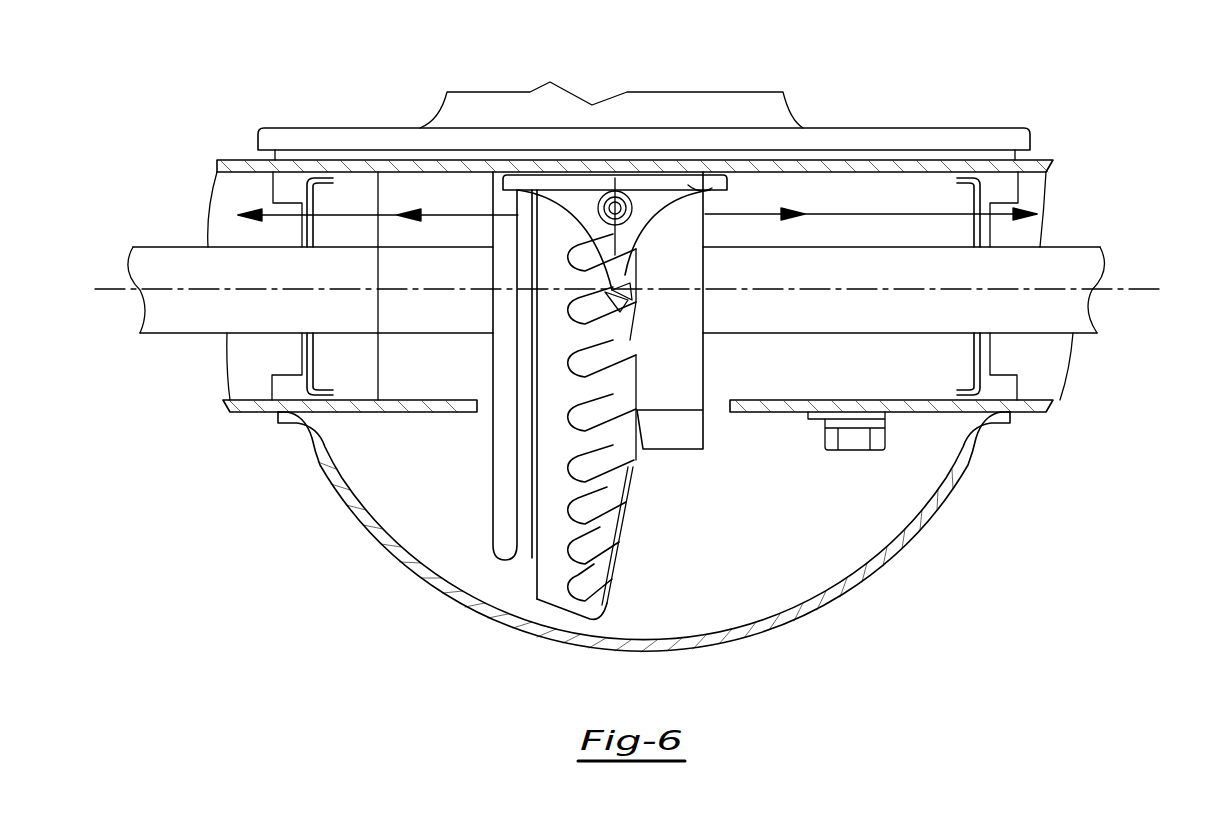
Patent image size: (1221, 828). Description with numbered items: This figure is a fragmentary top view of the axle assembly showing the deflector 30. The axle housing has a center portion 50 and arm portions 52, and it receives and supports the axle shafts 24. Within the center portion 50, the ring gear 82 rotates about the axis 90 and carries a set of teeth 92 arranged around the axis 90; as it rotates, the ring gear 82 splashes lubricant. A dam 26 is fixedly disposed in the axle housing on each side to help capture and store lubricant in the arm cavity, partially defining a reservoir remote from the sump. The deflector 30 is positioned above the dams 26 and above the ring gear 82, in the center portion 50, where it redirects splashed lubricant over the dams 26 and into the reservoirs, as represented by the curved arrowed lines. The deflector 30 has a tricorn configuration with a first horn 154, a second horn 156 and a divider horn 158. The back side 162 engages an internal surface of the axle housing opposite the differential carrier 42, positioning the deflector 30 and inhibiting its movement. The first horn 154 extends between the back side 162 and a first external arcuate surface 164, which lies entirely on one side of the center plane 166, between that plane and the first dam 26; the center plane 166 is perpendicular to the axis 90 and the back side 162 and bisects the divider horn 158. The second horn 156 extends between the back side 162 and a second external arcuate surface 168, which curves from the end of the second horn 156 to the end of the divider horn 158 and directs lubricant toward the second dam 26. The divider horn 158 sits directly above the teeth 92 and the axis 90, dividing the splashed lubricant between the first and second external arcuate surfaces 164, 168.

The axle shaft 24 is at (157, 309).
The dam 26 is at (222, 228).
The deflector 30 is at (587, 190).
The differential carrier 42 is at (985, 138).
The center portion 50 is at (783, 630).
The arm portion 52 is at (253, 413).
The ring gear 82 is at (535, 575).
The axis 90 is at (1108, 290).
The teeth 92 is at (610, 517).
The first horn 154 is at (513, 188).
The second horn 156 is at (708, 190).
The divider horn 158 is at (617, 303).
The back side 162 is at (708, 188).
The first external arcuate surface 164 is at (575, 222).
The center plane 166 is at (628, 188).
The second external arcuate surface 168 is at (652, 222).